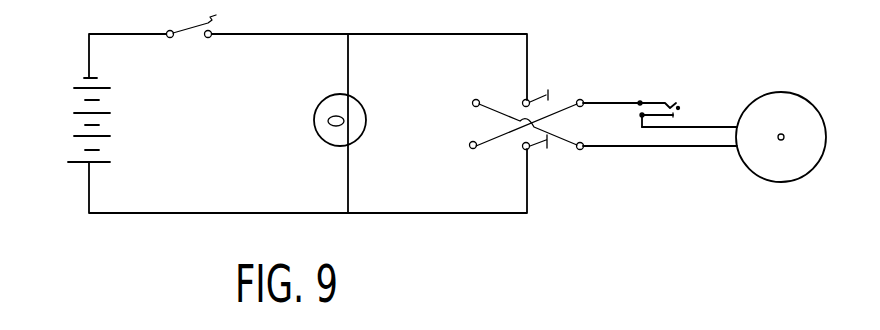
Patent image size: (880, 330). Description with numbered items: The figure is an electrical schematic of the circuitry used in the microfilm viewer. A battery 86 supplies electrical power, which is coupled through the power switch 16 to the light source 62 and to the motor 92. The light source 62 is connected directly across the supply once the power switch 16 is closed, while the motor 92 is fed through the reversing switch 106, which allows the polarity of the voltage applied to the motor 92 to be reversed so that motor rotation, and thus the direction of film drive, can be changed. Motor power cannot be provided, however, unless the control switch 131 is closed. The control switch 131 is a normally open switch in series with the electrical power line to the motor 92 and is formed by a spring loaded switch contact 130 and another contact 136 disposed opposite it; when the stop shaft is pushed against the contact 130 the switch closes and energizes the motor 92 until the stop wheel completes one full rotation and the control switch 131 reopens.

The battery 86 is at (78, 113).
The power switch 16 is at (190, 30).
The light source 62 is at (327, 145).
The reversing switch 106 is at (507, 93).
The spring loaded switch contact 130 is at (650, 100).
The control switch 131 is at (680, 106).
The contact 136 is at (677, 117).
The motor 92 is at (783, 167).